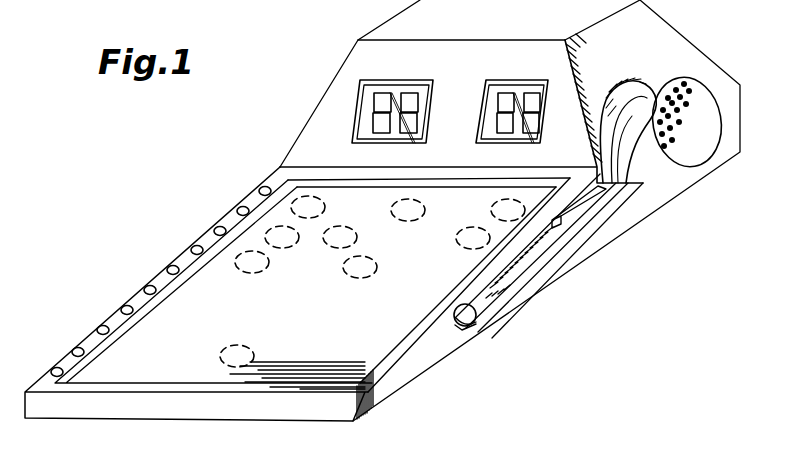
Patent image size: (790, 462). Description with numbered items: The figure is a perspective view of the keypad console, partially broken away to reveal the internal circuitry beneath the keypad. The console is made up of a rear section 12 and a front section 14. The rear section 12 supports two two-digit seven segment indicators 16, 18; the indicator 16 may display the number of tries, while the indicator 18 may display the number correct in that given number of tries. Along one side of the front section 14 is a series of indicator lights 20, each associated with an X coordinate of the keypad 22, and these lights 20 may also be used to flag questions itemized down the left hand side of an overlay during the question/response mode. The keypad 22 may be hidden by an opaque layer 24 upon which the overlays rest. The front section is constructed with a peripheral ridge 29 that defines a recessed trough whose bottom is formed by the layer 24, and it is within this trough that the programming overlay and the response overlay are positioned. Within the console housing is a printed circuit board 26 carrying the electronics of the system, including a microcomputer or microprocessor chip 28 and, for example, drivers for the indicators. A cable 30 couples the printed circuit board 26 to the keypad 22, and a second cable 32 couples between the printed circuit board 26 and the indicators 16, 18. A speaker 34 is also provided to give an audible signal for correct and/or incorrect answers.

The rear section 12 is at (362, 58).
The front section 14 is at (304, 401).
The two digit seven segment indicator 16 is at (420, 76).
The two digit seven segment indicator 18 is at (516, 76).
The indicator lights 20 is at (217, 231).
The keypad 22 is at (300, 322).
The opaque layer 24 is at (385, 335).
The printed circuit board 26 is at (545, 243).
The microcomputer or microprocessor chip 28 is at (590, 207).
The peripheral ridge 29 is at (258, 390).
The cable 30 is at (472, 317).
The second cable 32 is at (608, 140).
The speaker 34 is at (688, 143).